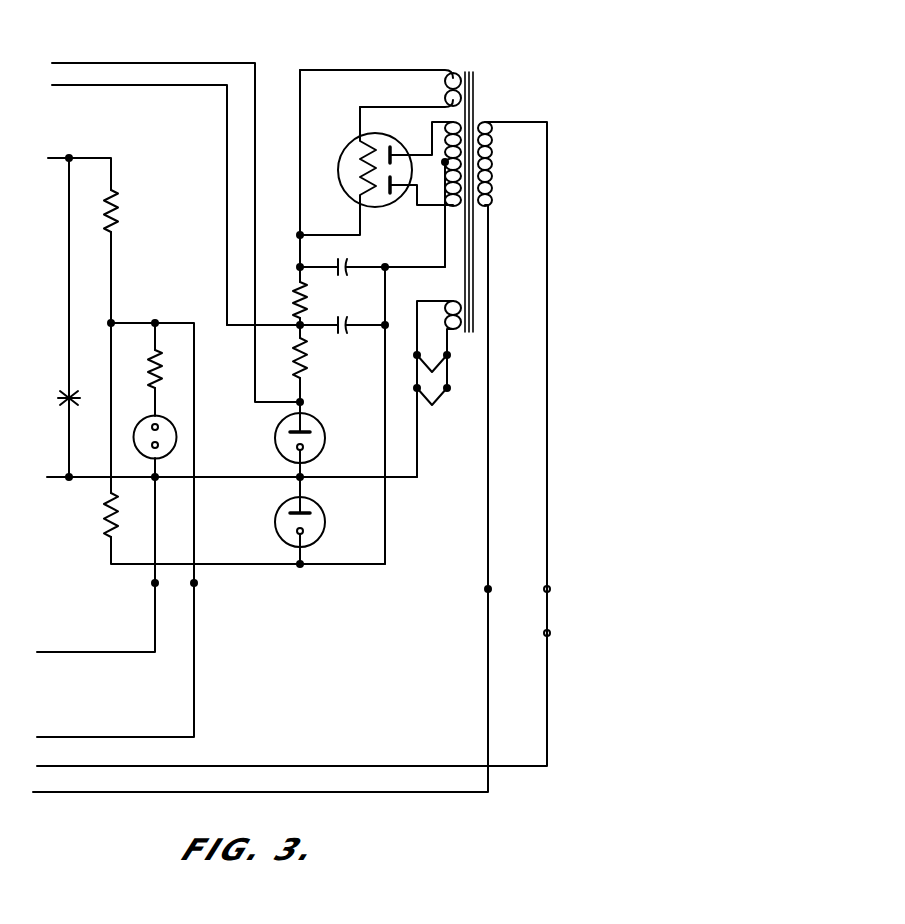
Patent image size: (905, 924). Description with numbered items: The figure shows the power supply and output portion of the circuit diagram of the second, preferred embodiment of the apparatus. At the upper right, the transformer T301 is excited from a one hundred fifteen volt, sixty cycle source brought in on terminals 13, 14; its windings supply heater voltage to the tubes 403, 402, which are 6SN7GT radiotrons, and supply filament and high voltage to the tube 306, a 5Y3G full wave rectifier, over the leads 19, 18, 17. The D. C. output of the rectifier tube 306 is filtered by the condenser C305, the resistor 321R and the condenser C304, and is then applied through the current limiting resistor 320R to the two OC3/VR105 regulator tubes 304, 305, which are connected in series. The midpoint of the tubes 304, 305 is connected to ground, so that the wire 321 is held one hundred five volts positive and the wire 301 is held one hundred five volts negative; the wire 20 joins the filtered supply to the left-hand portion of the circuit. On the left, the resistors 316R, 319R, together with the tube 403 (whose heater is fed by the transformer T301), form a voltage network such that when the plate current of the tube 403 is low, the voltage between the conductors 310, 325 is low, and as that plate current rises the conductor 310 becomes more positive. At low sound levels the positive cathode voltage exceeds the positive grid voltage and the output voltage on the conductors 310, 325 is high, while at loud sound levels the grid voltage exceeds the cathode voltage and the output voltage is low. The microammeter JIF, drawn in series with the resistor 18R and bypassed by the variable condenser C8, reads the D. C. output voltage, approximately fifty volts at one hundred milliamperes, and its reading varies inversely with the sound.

The resistor 316R is at (118, 205).
The resistor 18R is at (161, 354).
The variable capacitor C8 is at (74, 397).
The microammeter JIF is at (157, 446).
The resistor 319R is at (78, 515).
The conductor 325 is at (152, 583).
The conductor 310 is at (196, 585).
The wire 301 is at (300, 567).
The lead 20 is at (272, 324).
The wire 321 is at (292, 408).
The resistor 321R is at (335, 299).
The condenser C304 is at (350, 321).
The current limiting resistor 320R is at (335, 358).
The condenser C305 is at (344, 266).
The regulator tube 304 is at (309, 415).
The regulator tube 305 is at (324, 530).
The full wave rectifier tube 306 is at (370, 134).
The lead 19 is at (385, 63).
The lead 18 is at (390, 107).
The lead 17 is at (438, 120).
The transformer T301 is at (468, 72).
The tube 403 is at (450, 389).
The tube 402 is at (444, 427).
The terminal 13 is at (490, 591).
The terminal 14 is at (550, 589).